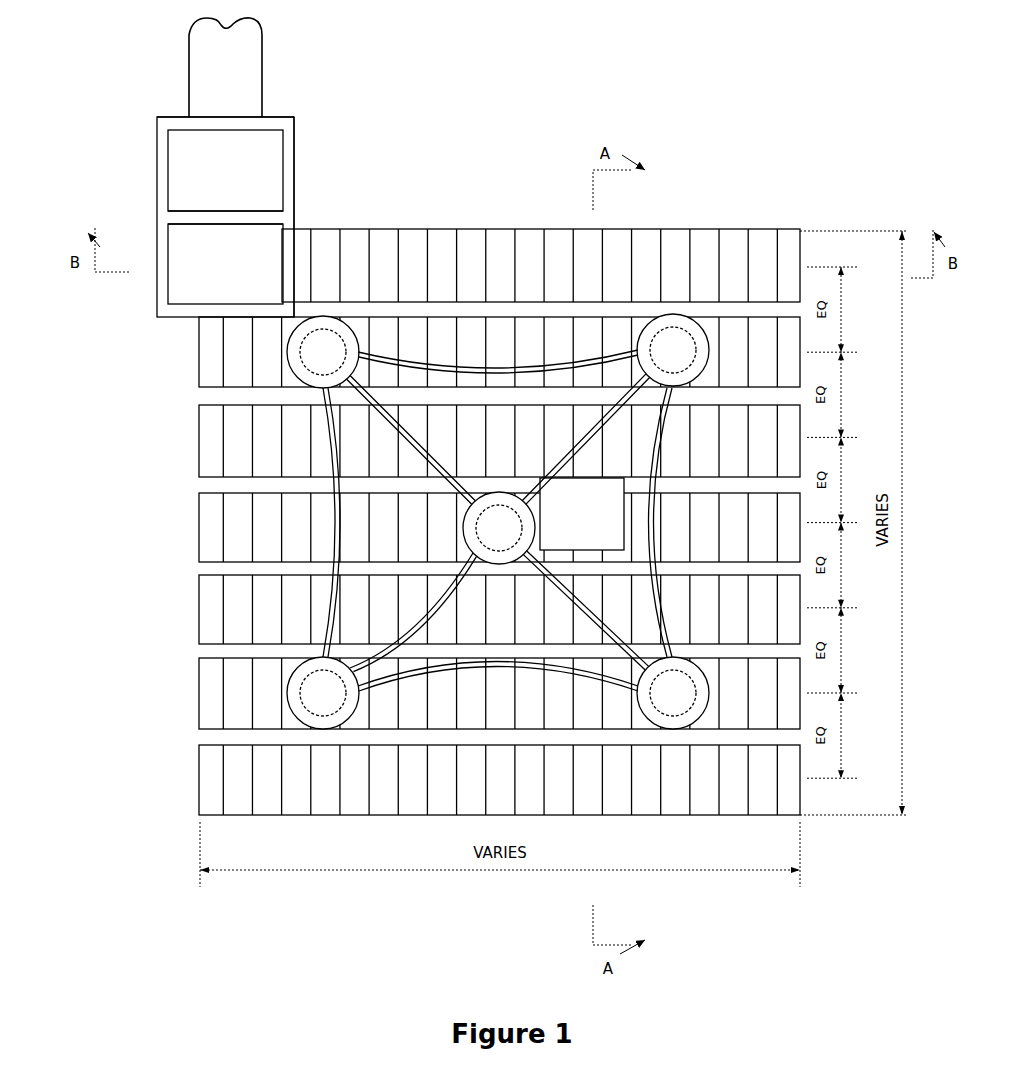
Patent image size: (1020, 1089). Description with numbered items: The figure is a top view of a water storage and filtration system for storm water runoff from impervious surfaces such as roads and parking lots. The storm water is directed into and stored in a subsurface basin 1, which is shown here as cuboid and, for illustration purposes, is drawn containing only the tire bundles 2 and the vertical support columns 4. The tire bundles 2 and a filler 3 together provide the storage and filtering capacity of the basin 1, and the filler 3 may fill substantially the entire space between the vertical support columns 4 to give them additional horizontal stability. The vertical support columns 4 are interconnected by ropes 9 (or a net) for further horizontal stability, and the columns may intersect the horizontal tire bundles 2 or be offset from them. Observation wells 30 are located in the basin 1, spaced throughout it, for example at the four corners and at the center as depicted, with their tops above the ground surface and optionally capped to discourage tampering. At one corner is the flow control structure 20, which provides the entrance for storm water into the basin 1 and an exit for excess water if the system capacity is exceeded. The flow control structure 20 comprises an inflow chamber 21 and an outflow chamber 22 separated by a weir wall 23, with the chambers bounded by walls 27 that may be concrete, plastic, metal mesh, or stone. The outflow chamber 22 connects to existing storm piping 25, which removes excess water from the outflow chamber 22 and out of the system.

The basin 1 is at (446, 168).
The tire bundles 2 is at (213, 443).
The filler 3 is at (357, 486).
The vertical support columns 4 is at (679, 657).
The ropes 9 is at (480, 667).
The flow control structure 20 is at (143, 112).
The inflow chamber 21 is at (200, 258).
The outflow chamber 22 is at (193, 175).
The weir wall 23 is at (230, 222).
The existing storm piping 25 is at (245, 68).
The walls 27 is at (288, 143).
The observation wells 30 is at (600, 512).